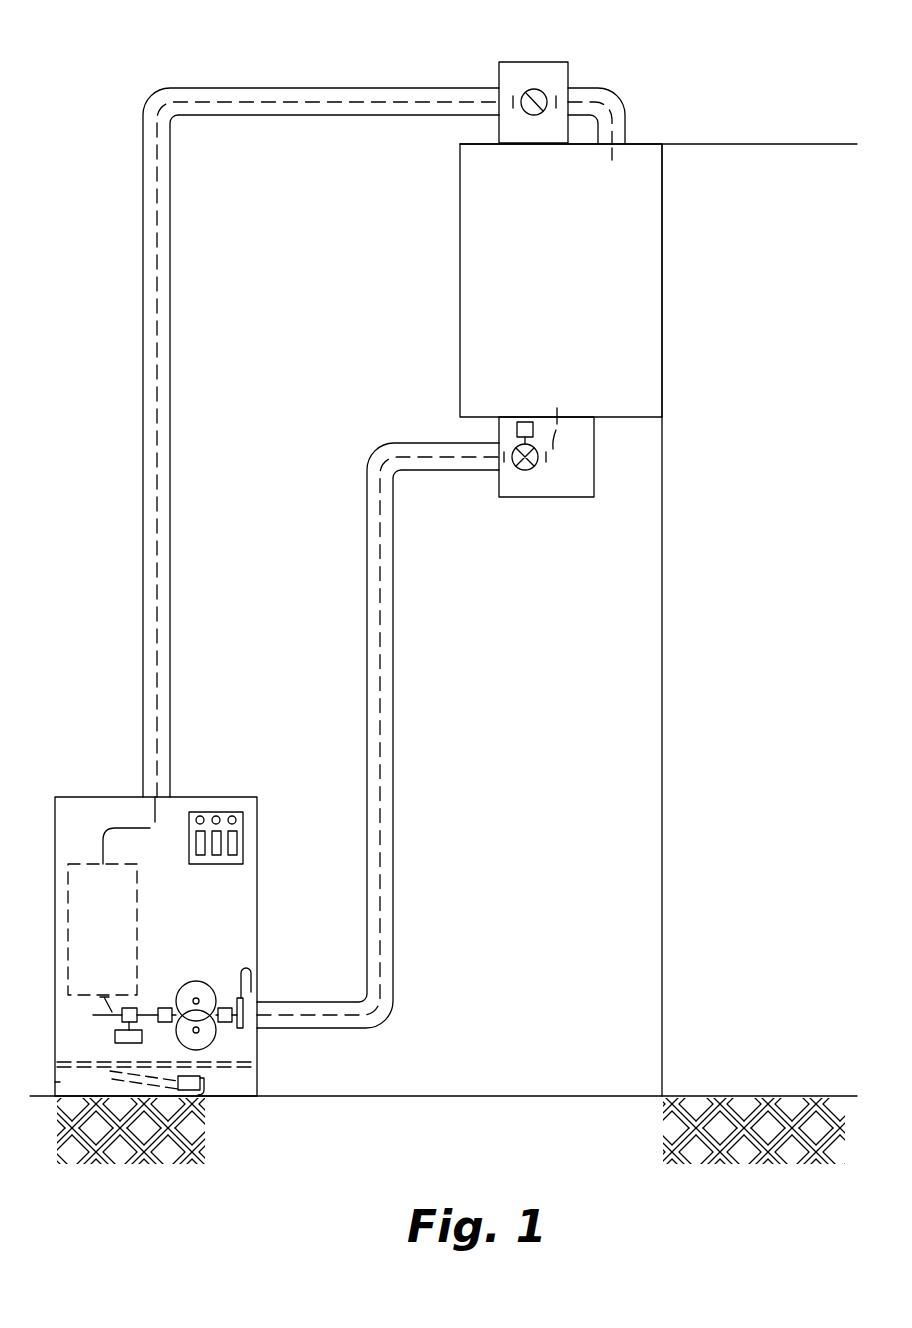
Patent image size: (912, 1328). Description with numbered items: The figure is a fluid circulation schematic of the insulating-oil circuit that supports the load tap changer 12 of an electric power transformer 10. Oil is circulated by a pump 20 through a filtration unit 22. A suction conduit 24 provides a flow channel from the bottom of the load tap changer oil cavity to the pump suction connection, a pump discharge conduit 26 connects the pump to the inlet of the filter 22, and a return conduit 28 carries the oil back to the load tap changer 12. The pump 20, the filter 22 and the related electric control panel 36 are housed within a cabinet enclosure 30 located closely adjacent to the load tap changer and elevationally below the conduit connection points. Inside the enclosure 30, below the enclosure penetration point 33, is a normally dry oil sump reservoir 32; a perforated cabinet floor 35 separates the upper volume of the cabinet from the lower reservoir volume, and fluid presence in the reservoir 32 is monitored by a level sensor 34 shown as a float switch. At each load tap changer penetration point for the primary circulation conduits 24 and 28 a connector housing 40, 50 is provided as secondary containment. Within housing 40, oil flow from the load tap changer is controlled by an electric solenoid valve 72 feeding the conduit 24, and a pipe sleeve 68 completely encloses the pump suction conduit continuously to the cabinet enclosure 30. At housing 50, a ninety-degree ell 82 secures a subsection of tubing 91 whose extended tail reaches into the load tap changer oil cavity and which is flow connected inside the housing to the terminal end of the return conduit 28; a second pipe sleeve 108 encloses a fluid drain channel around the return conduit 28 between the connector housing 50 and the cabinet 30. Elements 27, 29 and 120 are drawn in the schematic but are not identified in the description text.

The electric power transformer 10 is at (752, 553).
The load tap changer 12 is at (544, 325).
The pump 20 is at (175, 1003).
The filtration unit 22 is at (118, 899).
The suction conduit 24 is at (381, 651).
The pump discharge conduit 26 is at (150, 1013).
The sensor 27 is at (115, 1031).
The return conduit 28 is at (156, 338).
The valve 29 is at (543, 92).
The cabinet enclosure 30 is at (258, 863).
The oil sump reservoir 32 is at (258, 1082).
The enclosure penetration point 33 is at (155, 808).
The level sensor 34 is at (201, 1096).
The perforated cabinet floor 35 is at (105, 1062).
The electric control panel 36 is at (222, 812).
The connector housing 40 is at (545, 497).
The connector housing 50 is at (530, 62).
The pipe sleeve 68 is at (394, 580).
The electric solenoid valve 72 is at (533, 429).
The 90° ell 82 is at (620, 101).
The tubing subsection 91 is at (612, 154).
The pipe sleeve 108 is at (172, 270).
The filter bracket 120 is at (237, 1001).